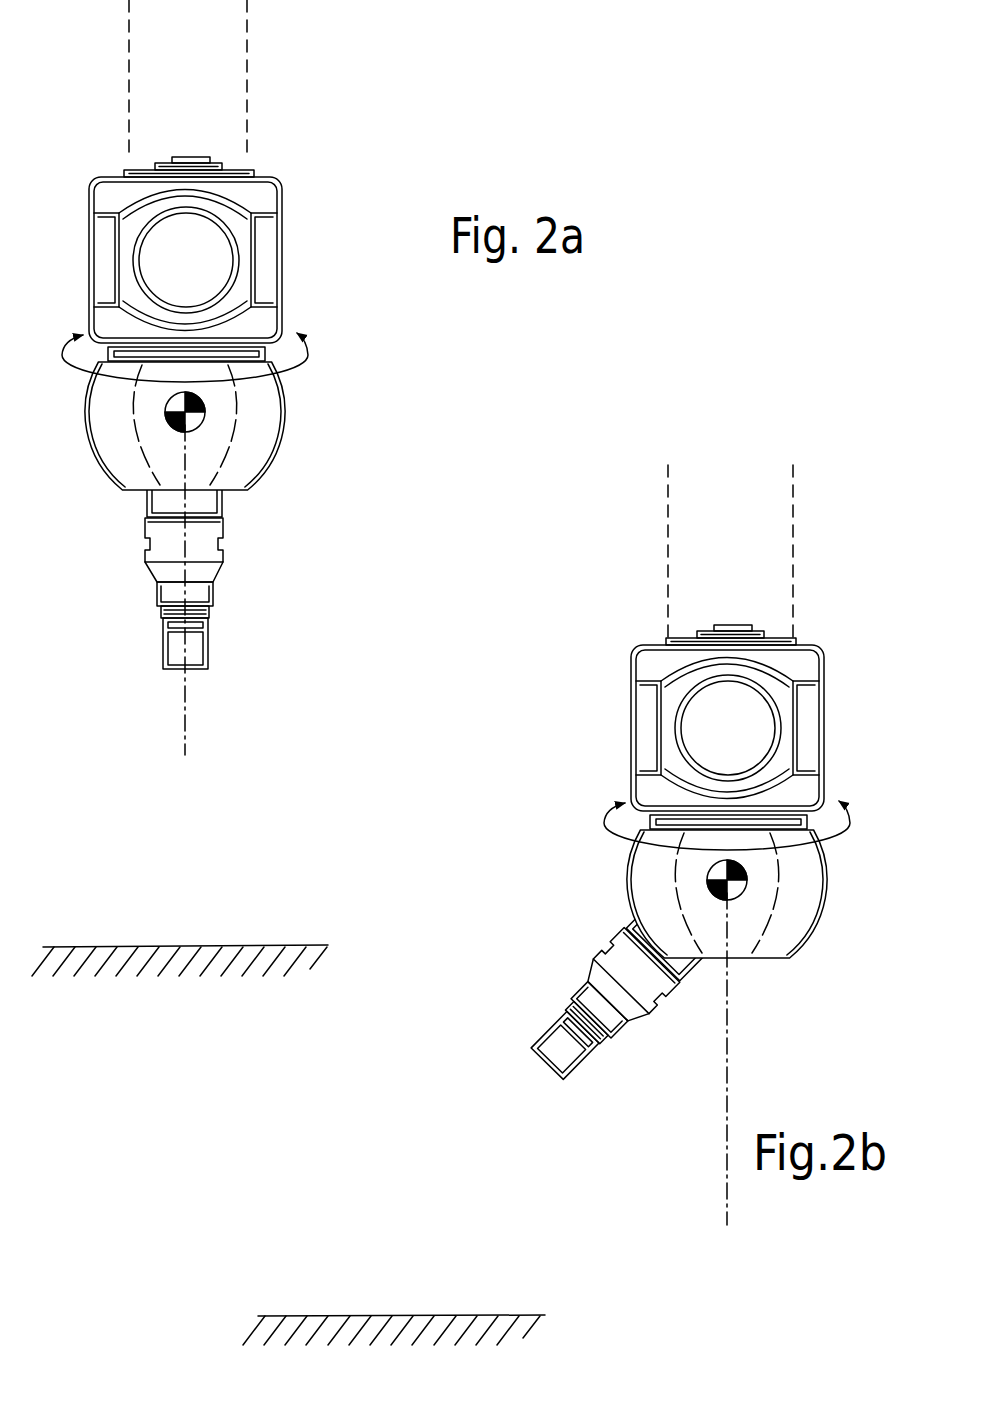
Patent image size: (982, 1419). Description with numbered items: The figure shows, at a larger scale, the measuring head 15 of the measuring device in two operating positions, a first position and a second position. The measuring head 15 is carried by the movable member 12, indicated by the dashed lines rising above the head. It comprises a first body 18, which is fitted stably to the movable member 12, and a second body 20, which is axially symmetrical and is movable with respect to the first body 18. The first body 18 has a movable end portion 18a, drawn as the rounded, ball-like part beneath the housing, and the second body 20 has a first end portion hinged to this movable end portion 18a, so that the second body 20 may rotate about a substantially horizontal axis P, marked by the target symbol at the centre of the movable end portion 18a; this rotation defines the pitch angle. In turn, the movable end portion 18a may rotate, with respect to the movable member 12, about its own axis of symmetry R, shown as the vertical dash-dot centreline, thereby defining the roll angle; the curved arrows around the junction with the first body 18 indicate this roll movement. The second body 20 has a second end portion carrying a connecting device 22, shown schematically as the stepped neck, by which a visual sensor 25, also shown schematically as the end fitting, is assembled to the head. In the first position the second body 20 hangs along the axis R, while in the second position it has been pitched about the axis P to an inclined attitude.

In FIG. 2A, the movable member 12 is at (252, 132).
In FIG. 2B, the movable member 12 is at (662, 565).
In FIG. 2A, the measuring head 15 is at (320, 341).
In FIG. 2B, the measuring head 15 is at (609, 777).
In FIG. 2A, the first body 18 is at (285, 262).
In FIG. 2B, the first body 18 is at (627, 711).
In FIG. 2A, the movable end portion 18a is at (268, 413).
In FIG. 2B, the movable end portion 18a is at (643, 880).
In FIG. 2A, the second body 20 is at (232, 583).
In FIG. 2B, the second body 20 is at (568, 984).
In FIG. 2A, the connecting device 22 is at (212, 613).
In FIG. 2B, the connecting device 22 is at (565, 1008).
In FIG. 2A, the visual sensor 25 is at (200, 679).
In FIG. 2B, the visual sensor 25 is at (537, 1073).
In FIG. 2A, the substantially horizontal axis P is at (196, 424).
In FIG. 2B, the substantially horizontal axis P is at (736, 892).
In FIG. 2A, the axis of symmetry R is at (187, 737).
In FIG. 2B, the axis of symmetry R is at (729, 1060).